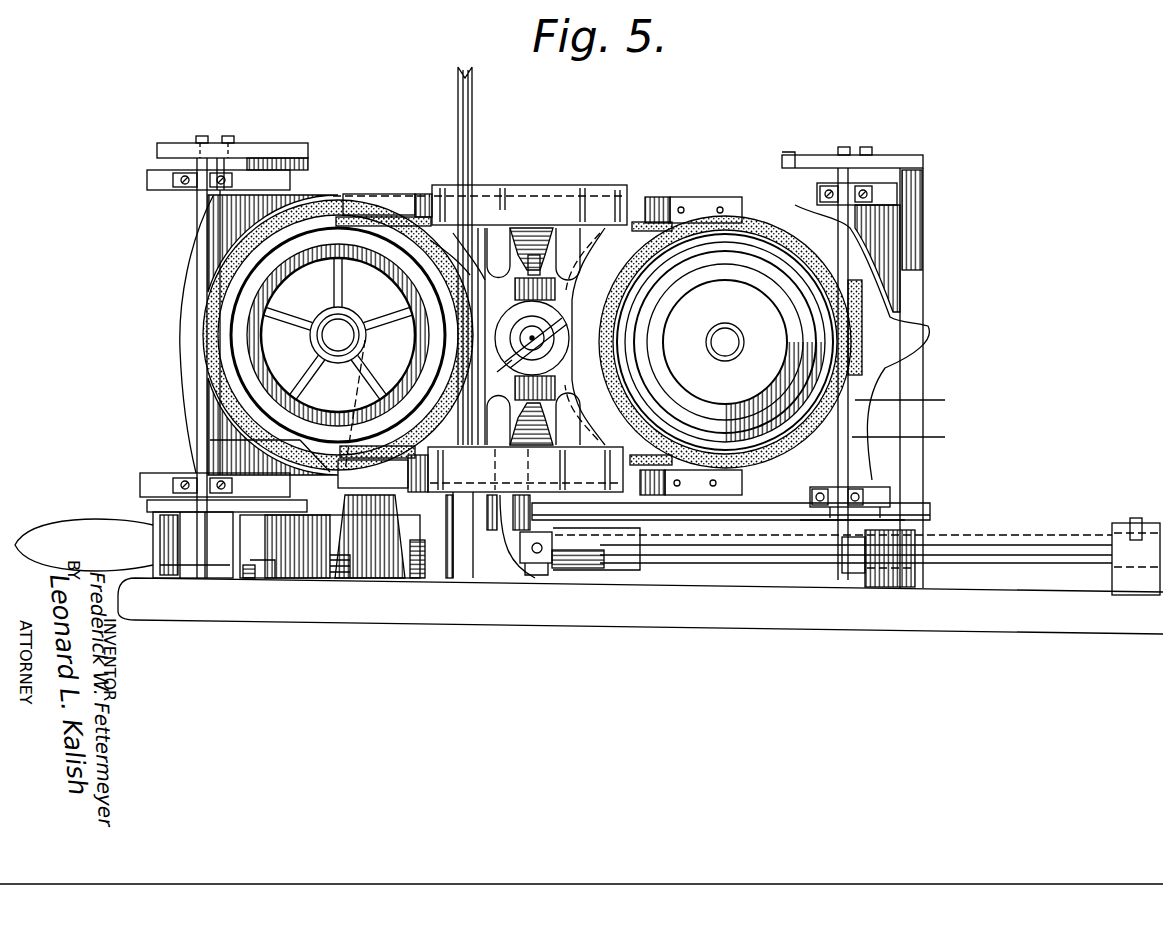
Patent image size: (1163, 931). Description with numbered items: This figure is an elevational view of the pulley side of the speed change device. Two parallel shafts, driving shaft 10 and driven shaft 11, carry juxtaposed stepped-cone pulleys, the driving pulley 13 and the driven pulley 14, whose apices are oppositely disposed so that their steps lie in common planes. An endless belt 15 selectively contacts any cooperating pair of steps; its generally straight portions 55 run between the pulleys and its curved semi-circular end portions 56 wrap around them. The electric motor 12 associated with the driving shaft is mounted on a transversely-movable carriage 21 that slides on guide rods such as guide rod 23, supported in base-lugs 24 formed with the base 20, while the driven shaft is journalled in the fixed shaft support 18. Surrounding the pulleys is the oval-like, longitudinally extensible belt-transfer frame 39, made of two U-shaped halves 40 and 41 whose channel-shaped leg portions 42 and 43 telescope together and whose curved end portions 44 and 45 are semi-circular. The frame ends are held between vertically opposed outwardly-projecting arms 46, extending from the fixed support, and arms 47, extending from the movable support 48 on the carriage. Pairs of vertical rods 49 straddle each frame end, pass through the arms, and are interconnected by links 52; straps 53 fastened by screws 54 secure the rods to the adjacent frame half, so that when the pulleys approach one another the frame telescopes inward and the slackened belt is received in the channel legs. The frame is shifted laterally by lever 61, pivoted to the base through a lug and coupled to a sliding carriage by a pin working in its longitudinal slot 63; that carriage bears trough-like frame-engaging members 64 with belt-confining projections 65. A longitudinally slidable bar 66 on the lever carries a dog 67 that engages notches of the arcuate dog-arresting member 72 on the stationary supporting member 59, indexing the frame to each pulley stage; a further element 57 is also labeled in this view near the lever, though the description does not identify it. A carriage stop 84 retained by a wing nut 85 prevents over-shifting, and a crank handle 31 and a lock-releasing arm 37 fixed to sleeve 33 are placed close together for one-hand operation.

The driving shaft 10 is at (726, 352).
The driven shaft 11 is at (338, 335).
The electric motor 12 is at (585, 258).
The driving pulley 13 is at (712, 316).
The driven pulley 14 is at (415, 292).
The endless belt 15 is at (322, 200).
The fixed shaft support 18 is at (330, 536).
The base 20 is at (505, 578).
The carriage 21 is at (720, 522).
The guide rod 23 is at (1030, 550).
The base-lug 24 is at (545, 570).
The crank handle 31 is at (52, 540).
The sleeve 33 is at (248, 580).
The lock-releasing arm 37 is at (185, 535).
The belt-transfer frame 39 is at (405, 194).
The frame half 40 is at (910, 504).
The frame half 41 is at (210, 443).
The leg portion 42 is at (670, 197).
The leg portion 43 is at (425, 194).
The curved end portion 44 is at (916, 399).
The curved end portion 45 is at (290, 408).
The outwardly-projecting arm 46 is at (165, 150).
The outwardly-projecting arm 47 is at (880, 160).
The movable support 48 is at (882, 258).
The vertical rod 49 is at (228, 136).
The link 52 is at (200, 136).
The strap 53 is at (192, 187).
The screw 54 is at (180, 183).
The straight portion 55 is at (438, 230).
The curved semi-circular end portion 56 is at (300, 260).
The stem 57 is at (486, 295).
The stationary supporting member 59 is at (490, 535).
The lever 61 is at (458, 100).
The longitudinal slot 63 is at (868, 487).
The frame-engaging member 64 is at (567, 205).
The belt-confining projection 65 is at (582, 250).
The longitudinally slidable bar 66 is at (468, 118).
The dog 67 is at (470, 270).
The dog-arresting member 72 is at (520, 262).
The carriage stop 84 is at (568, 350).
The wing nut 85 is at (562, 322).